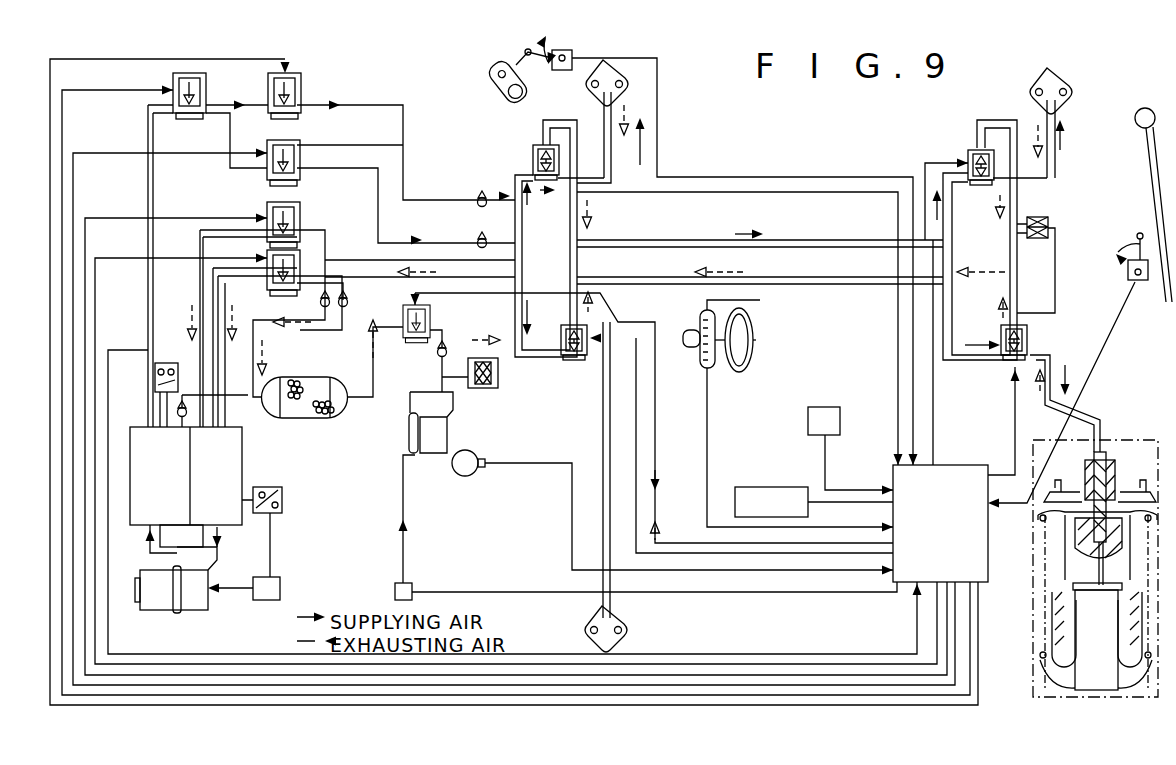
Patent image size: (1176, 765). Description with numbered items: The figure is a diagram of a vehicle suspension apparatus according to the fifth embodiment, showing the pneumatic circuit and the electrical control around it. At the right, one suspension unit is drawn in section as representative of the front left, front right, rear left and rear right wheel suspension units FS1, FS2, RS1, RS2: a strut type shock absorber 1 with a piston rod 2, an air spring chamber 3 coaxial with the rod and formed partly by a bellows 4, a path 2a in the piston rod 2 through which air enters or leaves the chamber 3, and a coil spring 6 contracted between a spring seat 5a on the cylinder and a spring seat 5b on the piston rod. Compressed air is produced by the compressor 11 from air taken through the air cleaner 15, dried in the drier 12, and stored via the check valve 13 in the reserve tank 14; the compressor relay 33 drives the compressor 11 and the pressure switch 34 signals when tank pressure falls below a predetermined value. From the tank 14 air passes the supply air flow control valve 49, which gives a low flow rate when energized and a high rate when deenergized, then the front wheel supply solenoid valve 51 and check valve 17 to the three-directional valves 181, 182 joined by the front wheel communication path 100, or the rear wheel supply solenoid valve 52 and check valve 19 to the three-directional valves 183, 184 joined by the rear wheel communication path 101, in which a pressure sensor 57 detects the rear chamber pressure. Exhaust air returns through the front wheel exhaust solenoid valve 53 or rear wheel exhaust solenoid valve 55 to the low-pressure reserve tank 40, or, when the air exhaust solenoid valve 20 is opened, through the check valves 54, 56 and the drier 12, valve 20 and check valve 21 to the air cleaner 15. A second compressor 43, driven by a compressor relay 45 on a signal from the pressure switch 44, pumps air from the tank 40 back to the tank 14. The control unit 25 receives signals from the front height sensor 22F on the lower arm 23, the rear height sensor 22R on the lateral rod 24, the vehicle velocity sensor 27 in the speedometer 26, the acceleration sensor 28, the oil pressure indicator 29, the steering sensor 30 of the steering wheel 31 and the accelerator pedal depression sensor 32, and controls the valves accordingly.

The supply air flow control valve 49 is at (188, 73).
The front wheel supply solenoid valve 51 is at (300, 84).
The rear wheel supply solenoid valve 52 is at (300, 152).
The front wheel exhaust solenoid valve 53 is at (300, 230).
The rear wheel exhaust solenoid valve 55 is at (322, 262).
The check valve 54 is at (318, 305).
The check valve 56 is at (356, 298).
The check valve 17 is at (478, 196).
The check valve 19 is at (478, 238).
The air exhaust solenoid valve 20 is at (435, 318).
The check valve 21 is at (448, 346).
The air cleaner 15 is at (478, 388).
The compressor 11 is at (428, 455).
The accelerator pedal depression sensor 32 is at (472, 475).
The compressor relay 33 is at (414, 580).
The drier 12 is at (306, 420).
The pressure switch 34 is at (168, 363).
The check valve 13 is at (192, 408).
The low-pressure reserve tank 40 is at (242, 480).
The pressure switch 44 is at (284, 498).
The reserve tank 14 is at (145, 555).
The compressor 43 is at (196, 612).
The compressor relay 45 is at (266, 600).
The front wheel communication path 100 is at (522, 222).
The three-directional valve 182 is at (535, 145).
The three-directional valve 181 is at (574, 362).
The front right wheel suspension unit FS2 is at (628, 97).
The front left wheel suspension unit FS1 is at (623, 640).
The lower arm 23 is at (494, 76).
The front height sensor 22F is at (560, 72).
The rear wheel communication path 101 is at (955, 238).
The three-directional valve 184 is at (972, 150).
The three-directional valve 183 is at (1030, 345).
The pressure sensor 57 is at (1050, 220).
The rear right wheel suspension unit RS2 is at (1070, 78).
The lateral rod 24 is at (1160, 230).
The rear height sensor 22R is at (1126, 270).
The speedometer 26 is at (702, 312).
The vehicle velocity sensor 27 is at (700, 352).
The steering sensor 30 is at (736, 368).
The steering wheel 31 is at (762, 322).
The acceleration (G) sensor 28 is at (842, 420).
The indicator (OIL) 29 is at (760, 487).
The control unit 25 is at (958, 465).
The rear left wheel suspension unit RS1 is at (1150, 438).
The path 2a is at (1106, 465).
The spring seat 5b is at (1140, 492).
The coil spring 6 is at (1040, 546).
The piston rod 2 is at (1076, 565).
The air spring chamber 3 is at (1073, 592).
The bellows 4 is at (1052, 625).
The strut type shock absorber 1 is at (1090, 683).
The spring seat 5a is at (1075, 676).